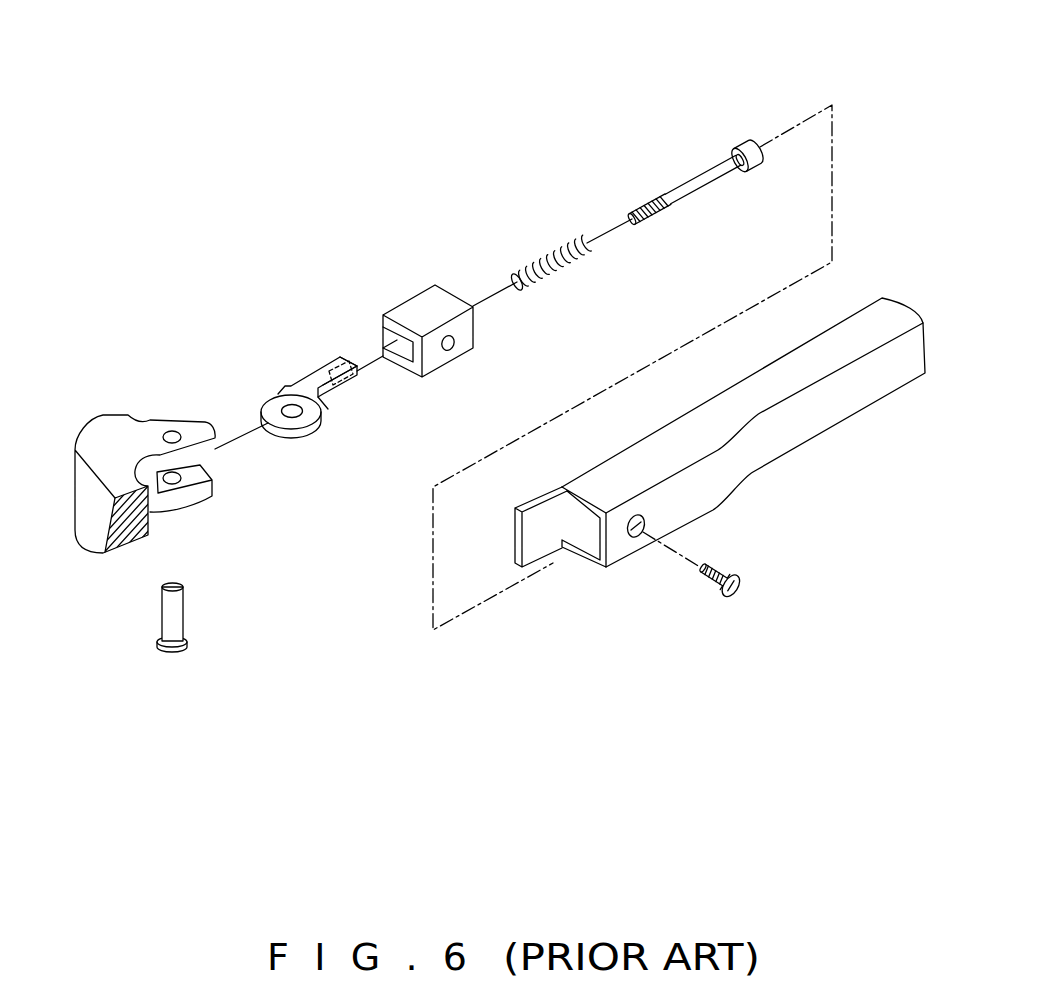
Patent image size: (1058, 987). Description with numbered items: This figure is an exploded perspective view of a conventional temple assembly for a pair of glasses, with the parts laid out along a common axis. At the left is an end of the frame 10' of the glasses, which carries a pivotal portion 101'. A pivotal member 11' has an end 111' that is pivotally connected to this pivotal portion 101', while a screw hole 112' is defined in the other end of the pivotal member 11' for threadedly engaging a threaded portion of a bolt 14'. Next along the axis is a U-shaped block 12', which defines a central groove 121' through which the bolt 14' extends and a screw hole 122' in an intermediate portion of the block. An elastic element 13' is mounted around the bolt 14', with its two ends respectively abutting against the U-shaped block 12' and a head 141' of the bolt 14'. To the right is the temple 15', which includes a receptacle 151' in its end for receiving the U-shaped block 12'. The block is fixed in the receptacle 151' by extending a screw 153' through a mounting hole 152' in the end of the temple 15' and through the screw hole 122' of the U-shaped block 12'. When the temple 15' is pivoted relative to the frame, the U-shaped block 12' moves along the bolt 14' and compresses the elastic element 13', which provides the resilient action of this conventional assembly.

The frame 10' is at (131, 513).
The pivotal portion 101' is at (197, 358).
The pivotal member 11' is at (309, 353).
The end of pivotal member 111' is at (306, 473).
The screw hole 112' is at (332, 322).
The U-shaped block 12' is at (420, 285).
The central groove 121' is at (397, 399).
The screw hole 122' is at (479, 383).
The elastic element 13' is at (546, 220).
The bolt 14' is at (684, 209).
The head of bolt 141' is at (703, 95).
The temple 15' is at (743, 432).
The receptacle 151' is at (560, 584).
The mounting hole 152' is at (650, 600).
The screw 153' is at (727, 633).